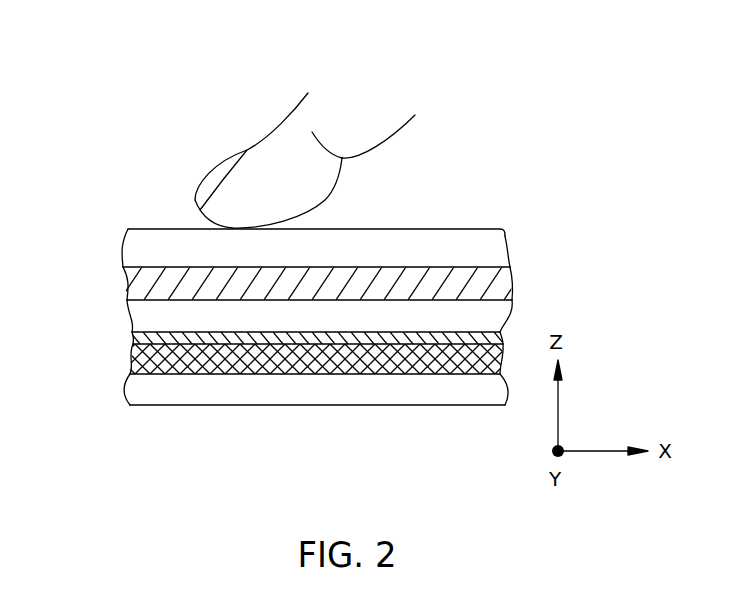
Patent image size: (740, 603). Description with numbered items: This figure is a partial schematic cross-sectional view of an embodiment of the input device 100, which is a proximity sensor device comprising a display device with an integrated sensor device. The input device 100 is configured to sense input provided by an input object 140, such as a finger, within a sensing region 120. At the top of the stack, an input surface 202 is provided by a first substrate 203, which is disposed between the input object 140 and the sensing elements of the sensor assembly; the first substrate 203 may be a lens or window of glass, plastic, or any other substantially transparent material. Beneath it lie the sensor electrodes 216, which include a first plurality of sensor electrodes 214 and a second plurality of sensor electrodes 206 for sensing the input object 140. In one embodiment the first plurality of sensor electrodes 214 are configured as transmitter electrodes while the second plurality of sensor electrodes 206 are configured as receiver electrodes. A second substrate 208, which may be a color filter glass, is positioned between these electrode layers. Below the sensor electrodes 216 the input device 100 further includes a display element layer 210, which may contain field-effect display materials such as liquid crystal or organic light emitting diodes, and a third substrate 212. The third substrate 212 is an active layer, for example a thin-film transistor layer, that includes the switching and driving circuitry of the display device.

The input device 100 is at (316, 263).
The sensing region 120 is at (132, 187).
The input object 140 is at (262, 110).
The input surface 202 is at (357, 228).
The first substrate 203 is at (453, 248).
The second plurality of sensor electrodes 206 is at (130, 283).
The second substrate 208 is at (148, 320).
The display element layer 210 is at (193, 367).
The third substrate 212 is at (313, 390).
The first plurality of sensor electrodes 214 is at (491, 335).
The sensor electrodes 216 is at (462, 323).